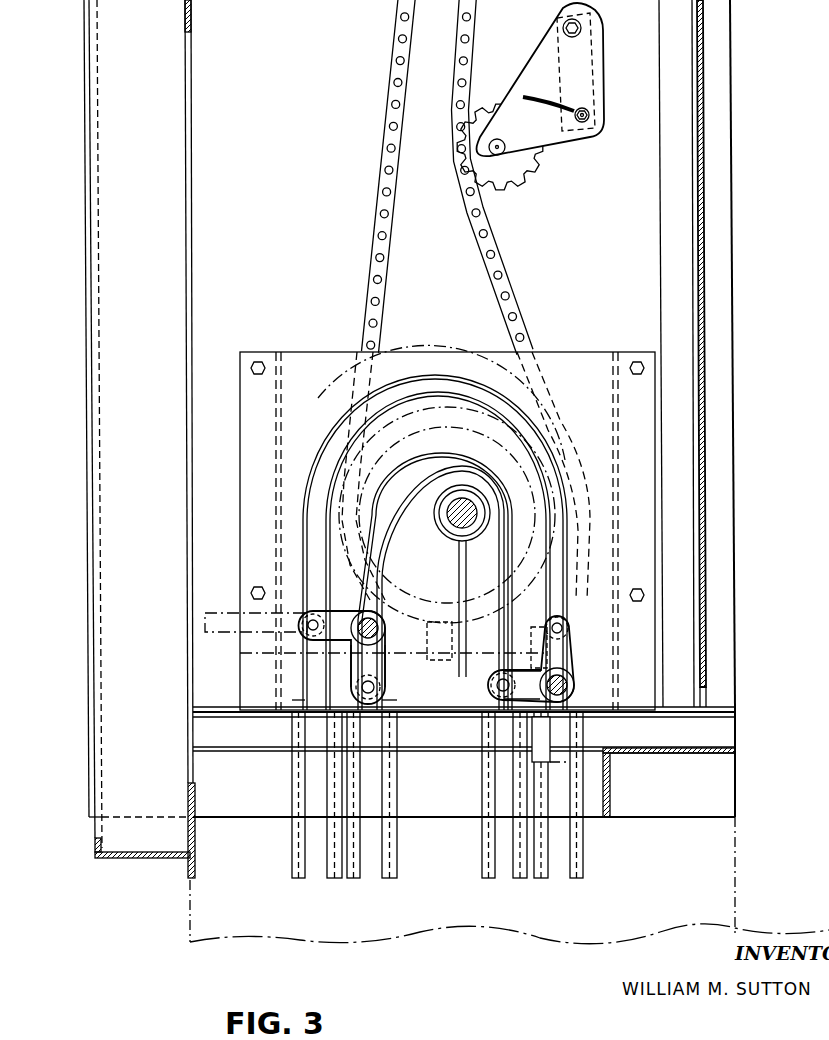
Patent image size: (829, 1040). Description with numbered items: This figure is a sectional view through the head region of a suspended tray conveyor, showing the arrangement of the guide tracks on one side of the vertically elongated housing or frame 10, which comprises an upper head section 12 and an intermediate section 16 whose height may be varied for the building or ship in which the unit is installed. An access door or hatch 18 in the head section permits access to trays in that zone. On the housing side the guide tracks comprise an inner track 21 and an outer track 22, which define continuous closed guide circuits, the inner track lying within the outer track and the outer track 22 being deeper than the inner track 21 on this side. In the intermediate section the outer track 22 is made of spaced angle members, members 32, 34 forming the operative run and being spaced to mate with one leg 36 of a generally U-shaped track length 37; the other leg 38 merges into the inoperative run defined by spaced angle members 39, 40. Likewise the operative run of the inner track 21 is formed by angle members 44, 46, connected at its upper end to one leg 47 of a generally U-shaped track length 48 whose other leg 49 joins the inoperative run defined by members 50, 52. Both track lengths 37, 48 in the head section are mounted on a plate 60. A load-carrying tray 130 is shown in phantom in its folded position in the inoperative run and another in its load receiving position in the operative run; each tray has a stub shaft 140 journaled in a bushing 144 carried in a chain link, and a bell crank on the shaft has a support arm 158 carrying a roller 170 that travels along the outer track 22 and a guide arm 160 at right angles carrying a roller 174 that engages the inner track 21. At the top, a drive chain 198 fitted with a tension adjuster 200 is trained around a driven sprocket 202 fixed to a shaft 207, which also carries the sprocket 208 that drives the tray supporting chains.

The housing or frame 10 is at (767, 704).
The upper head section 12 is at (733, 441).
The intermediate section 16 is at (740, 892).
The access door or hatch 18 is at (84, 53).
The inner track 21 is at (366, 849).
The outer track 22 is at (322, 845).
The angle member 32 is at (294, 868).
The angle member 34 is at (333, 878).
The leg of U-shaped track length 36 is at (315, 672).
The U-shaped track length 37 is at (400, 395).
The leg of U-shaped track length 38 is at (562, 572).
The angle member 39 is at (538, 878).
The angle member 40 is at (580, 878).
The angle member 44 is at (352, 878).
The angle member 46 is at (390, 878).
The leg of U-shaped track length 47 is at (367, 600).
The U-shaped track length 48 is at (430, 473).
The leg of U-shaped track length 49 is at (513, 568).
The track member 50 is at (488, 878).
The track member 52 is at (521, 878).
The plate 60 is at (582, 363).
The load-carrying tray 130 is at (223, 622).
The stub shaft 140 is at (380, 633).
The bushing 144 is at (380, 615).
The support arm 158 is at (338, 611).
The guide arm 160 is at (382, 667).
The roller 170 is at (338, 640).
The roller 174 is at (385, 688).
The drive chain 198 is at (493, 257).
The tension adjuster 200 is at (550, 137).
The driven sprocket 202 is at (330, 478).
The shaft 207 is at (452, 530).
The sprocket 208 is at (393, 450).